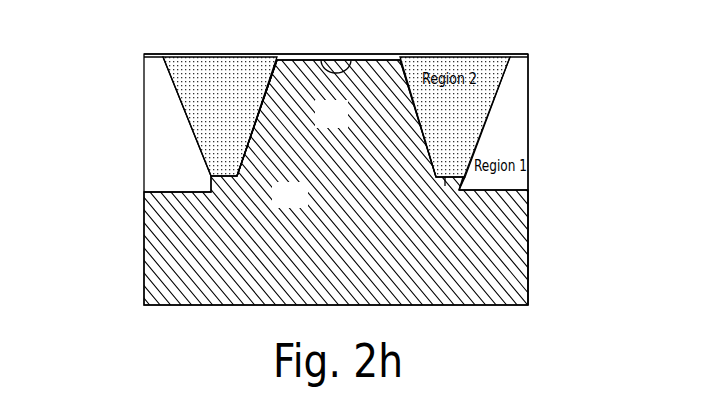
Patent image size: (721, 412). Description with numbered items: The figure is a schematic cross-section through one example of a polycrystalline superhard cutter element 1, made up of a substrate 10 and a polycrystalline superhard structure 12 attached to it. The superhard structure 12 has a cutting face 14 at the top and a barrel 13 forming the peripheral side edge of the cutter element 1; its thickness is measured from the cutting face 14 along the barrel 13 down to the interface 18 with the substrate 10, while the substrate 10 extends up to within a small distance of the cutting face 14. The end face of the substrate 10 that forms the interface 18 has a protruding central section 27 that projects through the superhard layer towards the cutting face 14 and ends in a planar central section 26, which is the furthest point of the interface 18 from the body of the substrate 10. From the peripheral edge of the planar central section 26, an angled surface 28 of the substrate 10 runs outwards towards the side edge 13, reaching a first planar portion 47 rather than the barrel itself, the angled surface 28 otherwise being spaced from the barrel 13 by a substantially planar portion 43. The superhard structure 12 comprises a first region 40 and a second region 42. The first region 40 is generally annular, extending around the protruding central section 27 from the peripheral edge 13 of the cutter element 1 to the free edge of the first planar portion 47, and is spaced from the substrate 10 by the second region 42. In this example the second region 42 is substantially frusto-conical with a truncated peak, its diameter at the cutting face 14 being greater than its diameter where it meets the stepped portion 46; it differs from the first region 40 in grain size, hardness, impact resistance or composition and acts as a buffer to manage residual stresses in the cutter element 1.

The polycrystalline superhard cutter element 1 is at (112, 187).
The substrate 10 is at (495, 287).
The polycrystalline superhard structure 12 is at (533, 92).
The barrel 13 is at (528, 237).
The cutting face 14 is at (528, 55).
The interface 18 is at (270, 83).
The planar central section 26 is at (333, 73).
The protruding central section 27 is at (345, 125).
The surface 28 is at (252, 152).
The first region 40 is at (155, 122).
The second region 42 is at (172, 78).
The planar portion 43 is at (507, 200).
The stepped portion 46 is at (462, 187).
The first planar portion 47 is at (445, 178).